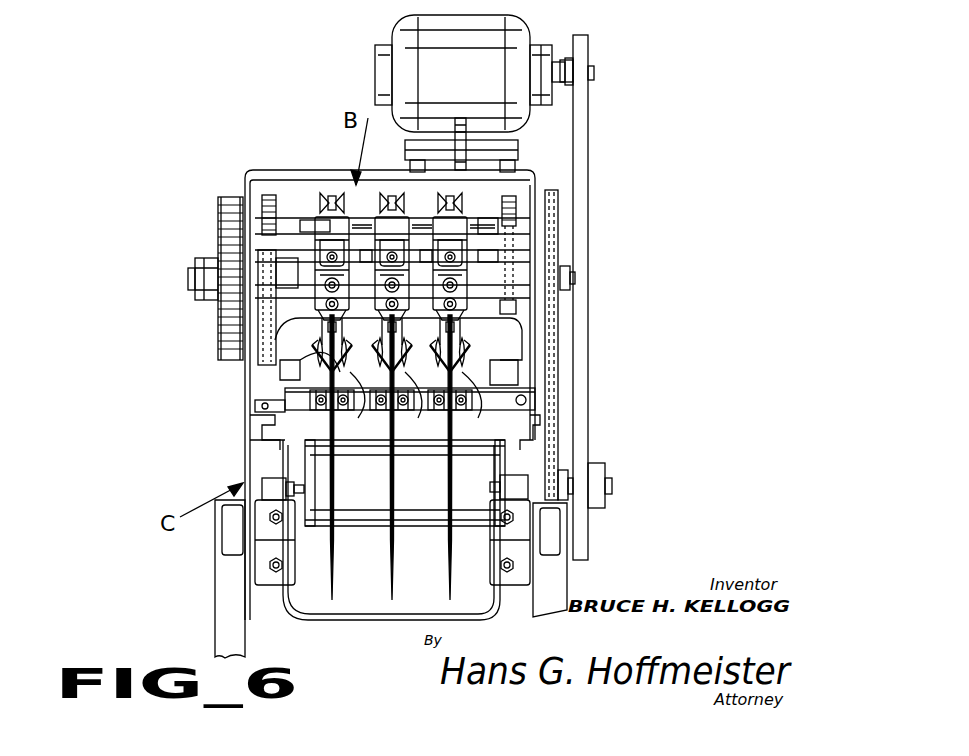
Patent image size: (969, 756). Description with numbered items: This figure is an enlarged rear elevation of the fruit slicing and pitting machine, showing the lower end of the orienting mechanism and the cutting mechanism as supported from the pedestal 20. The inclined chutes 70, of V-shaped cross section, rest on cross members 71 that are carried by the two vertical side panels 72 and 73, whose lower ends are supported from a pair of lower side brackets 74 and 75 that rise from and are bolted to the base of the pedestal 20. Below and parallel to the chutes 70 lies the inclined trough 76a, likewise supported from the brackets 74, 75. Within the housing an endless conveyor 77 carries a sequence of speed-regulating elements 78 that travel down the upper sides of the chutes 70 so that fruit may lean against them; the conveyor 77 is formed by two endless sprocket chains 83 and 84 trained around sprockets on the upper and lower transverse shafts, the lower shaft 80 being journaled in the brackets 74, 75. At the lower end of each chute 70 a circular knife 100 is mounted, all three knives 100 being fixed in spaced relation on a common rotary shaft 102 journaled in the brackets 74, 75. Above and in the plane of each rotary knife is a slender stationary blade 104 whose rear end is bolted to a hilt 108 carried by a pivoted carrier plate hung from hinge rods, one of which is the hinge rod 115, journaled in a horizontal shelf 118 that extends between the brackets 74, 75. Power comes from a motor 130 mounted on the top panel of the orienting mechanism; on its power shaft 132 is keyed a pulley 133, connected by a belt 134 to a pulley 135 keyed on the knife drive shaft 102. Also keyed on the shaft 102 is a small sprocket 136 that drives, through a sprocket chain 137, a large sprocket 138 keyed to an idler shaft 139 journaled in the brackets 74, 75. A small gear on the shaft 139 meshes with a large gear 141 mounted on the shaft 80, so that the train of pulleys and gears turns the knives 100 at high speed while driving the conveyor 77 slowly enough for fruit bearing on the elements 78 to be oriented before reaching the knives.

The pedestal 20 is at (215, 608).
The inclined chute 70 is at (300, 362).
The cross member 71 is at (268, 410).
The side panel 72 is at (535, 408).
The side panel 73 is at (275, 420).
The lower side bracket 74 is at (278, 460).
The lower side bracket 75 is at (538, 432).
The inclined trough 76a is at (285, 468).
The endless conveyor 77 is at (520, 325).
The speed-regulating element 78 is at (505, 362).
The lower transverse shaft 80 is at (195, 276).
The sprocket chain 83 is at (278, 200).
The sprocket chain 84 is at (545, 190).
The circular knife 100 is at (335, 590).
The rotary shaft 102 is at (612, 486).
The stationary blade 104 is at (405, 413).
The hilt 108 is at (391, 331).
The hinge rod 115 is at (312, 218).
The horizontal shelf 118 is at (560, 240).
The motor 130 is at (482, 80).
The power shaft 132 is at (588, 70).
The pulley 133 is at (590, 98).
The belt 134 is at (585, 135).
The pulley 135 is at (590, 538).
The small sprocket 136 is at (565, 492).
The sprocket chain 137 is at (548, 300).
The large sprocket 138 is at (572, 270).
The idler shaft 139 is at (575, 278).
The large gear 141 is at (225, 318).